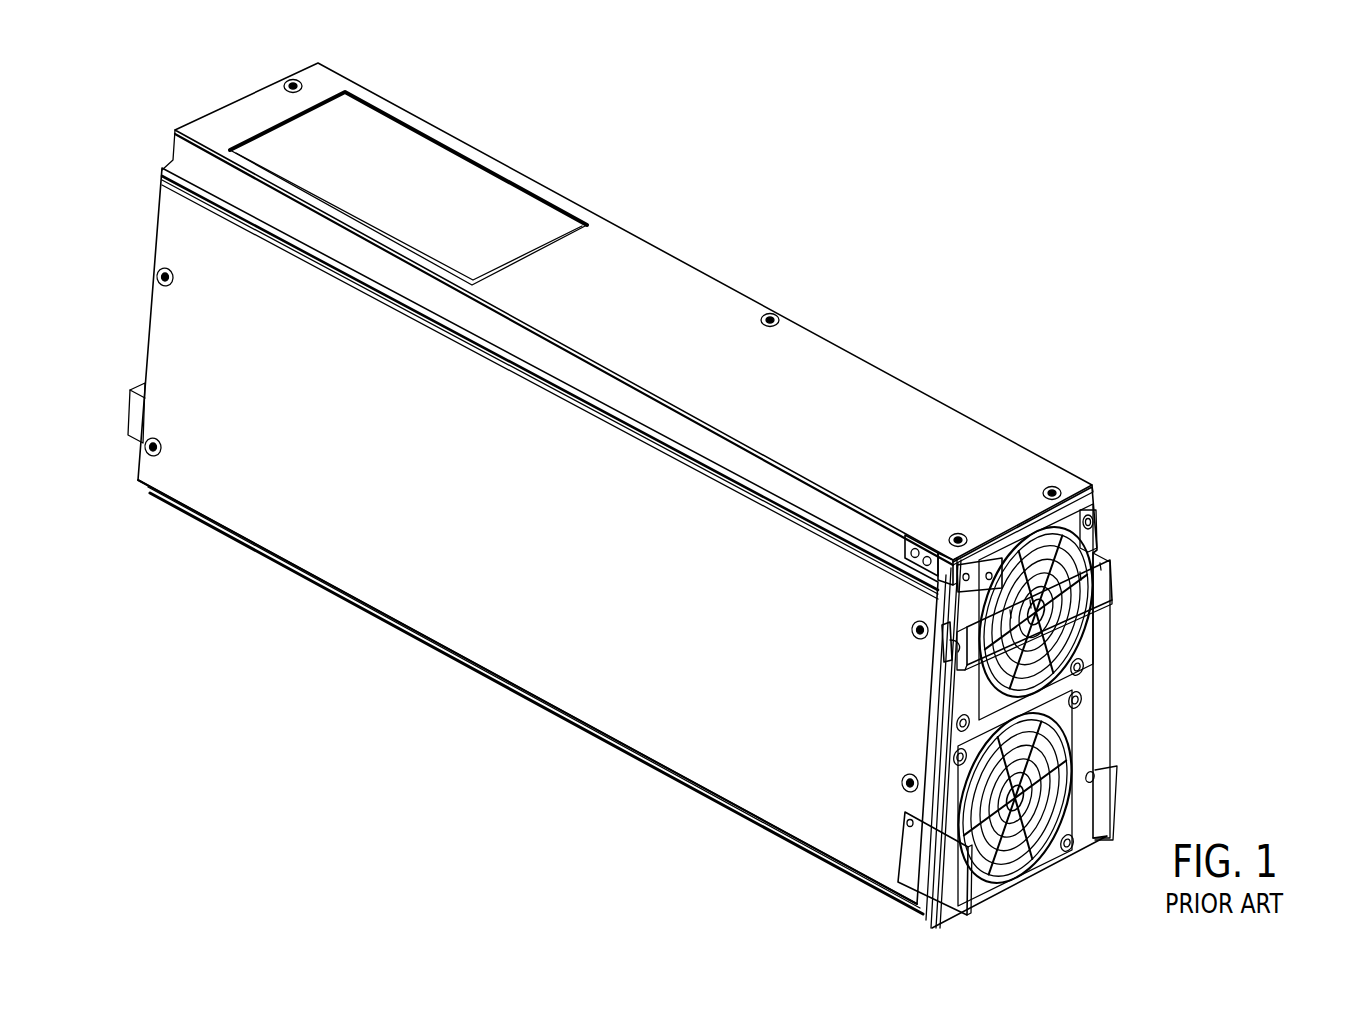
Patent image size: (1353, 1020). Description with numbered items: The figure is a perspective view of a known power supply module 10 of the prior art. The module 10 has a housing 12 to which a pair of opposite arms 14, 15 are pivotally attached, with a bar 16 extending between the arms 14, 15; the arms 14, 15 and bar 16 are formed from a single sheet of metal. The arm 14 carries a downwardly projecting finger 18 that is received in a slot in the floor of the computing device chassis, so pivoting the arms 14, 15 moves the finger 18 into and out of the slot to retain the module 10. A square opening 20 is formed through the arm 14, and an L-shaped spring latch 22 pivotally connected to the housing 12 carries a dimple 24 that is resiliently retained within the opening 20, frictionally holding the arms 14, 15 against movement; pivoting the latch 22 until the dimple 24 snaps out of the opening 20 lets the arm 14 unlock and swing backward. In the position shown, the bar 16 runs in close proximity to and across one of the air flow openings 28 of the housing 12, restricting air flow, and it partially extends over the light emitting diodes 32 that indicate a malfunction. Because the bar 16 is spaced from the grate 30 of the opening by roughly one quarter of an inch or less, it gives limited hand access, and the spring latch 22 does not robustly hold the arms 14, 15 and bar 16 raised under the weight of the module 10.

The power supply module 10 is at (668, 218).
The housing 12 is at (713, 307).
The arm 14 is at (933, 727).
The arm 15 is at (1096, 720).
The bar 16 is at (1097, 587).
The finger 18 is at (927, 920).
The square opening 20 is at (943, 568).
The spring latch 22 is at (976, 572).
The dimple 24 is at (944, 563).
The air flow opening 28 is at (1070, 632).
The grate 30 is at (1082, 643).
The light emitting diodes 32 is at (961, 644).